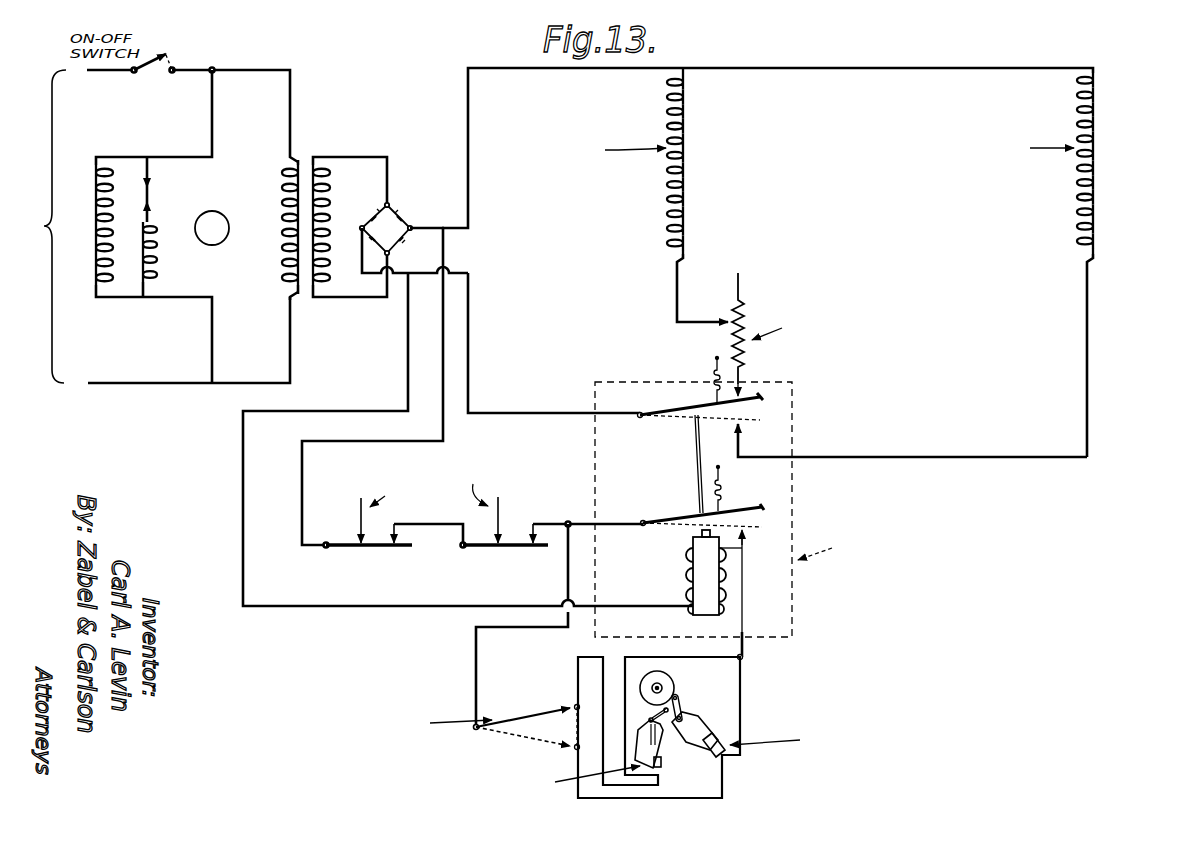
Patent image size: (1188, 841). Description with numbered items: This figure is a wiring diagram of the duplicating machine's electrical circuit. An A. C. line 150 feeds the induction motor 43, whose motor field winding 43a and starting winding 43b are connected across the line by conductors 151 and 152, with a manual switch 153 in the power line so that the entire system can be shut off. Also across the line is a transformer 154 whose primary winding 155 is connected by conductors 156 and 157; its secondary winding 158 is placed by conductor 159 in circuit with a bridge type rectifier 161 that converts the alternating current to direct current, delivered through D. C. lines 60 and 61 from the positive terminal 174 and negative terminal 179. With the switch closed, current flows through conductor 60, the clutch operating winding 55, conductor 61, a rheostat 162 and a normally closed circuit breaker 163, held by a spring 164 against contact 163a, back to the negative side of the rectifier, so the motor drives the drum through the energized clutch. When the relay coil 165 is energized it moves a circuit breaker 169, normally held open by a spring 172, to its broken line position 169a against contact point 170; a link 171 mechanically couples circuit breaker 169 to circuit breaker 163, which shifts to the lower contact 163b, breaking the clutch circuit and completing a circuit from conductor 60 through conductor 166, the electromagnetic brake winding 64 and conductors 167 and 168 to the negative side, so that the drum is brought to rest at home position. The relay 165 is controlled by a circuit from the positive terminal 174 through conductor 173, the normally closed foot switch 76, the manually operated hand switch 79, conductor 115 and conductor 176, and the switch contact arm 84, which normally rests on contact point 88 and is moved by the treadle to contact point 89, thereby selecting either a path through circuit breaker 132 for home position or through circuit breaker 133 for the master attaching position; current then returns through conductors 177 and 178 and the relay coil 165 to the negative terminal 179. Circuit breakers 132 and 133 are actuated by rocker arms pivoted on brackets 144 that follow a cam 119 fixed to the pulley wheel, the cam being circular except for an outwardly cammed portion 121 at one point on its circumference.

The motor 43 is at (122, 156).
The motor field winding 43a is at (95, 297).
The starting winding 43b is at (157, 272).
The clutch operating winding 55 is at (686, 182).
The D. C. line 60 is at (470, 196).
The D. C. line 61 is at (468, 350).
The electromagnetic brake winding 64 is at (1094, 165).
The normally closed switch 76 is at (340, 545).
The hand switch 79 is at (510, 543).
The switch contact arm 84 is at (522, 718).
The contact point 88 is at (577, 707).
The contact point 89 is at (577, 747).
The conductor 115 is at (555, 520).
The cam 119 is at (668, 690).
The outwardly cammed portion 121 is at (680, 708).
The circuit breaker 132 is at (668, 766).
The circuit breaker 133 is at (722, 731).
The brackets 144 is at (690, 722).
The A. C. line 150 is at (55, 206).
The conductor 151 is at (212, 117).
The conductor 152 is at (212, 343).
The manual switch 153 is at (180, 52).
The transformer 154 is at (300, 300).
The primary winding 155 is at (296, 160).
The conductor 156 is at (291, 95).
The conductor 157 is at (290, 375).
The transformer secondary winding 158 is at (328, 222).
The conductor 159 is at (362, 157).
The bridge type rectifier 161 is at (400, 211).
The rheostat 162 is at (744, 318).
The normally closed circuit breaker 163 is at (752, 406).
The contact 163a is at (748, 397).
The lower contact 163b is at (758, 420).
The spring 164 is at (715, 375).
The relay coil 165 is at (692, 568).
The conductor 166 is at (983, 58).
The conductor 167 is at (1087, 393).
The conductor 168 is at (945, 457).
The circuit breaker 169 is at (756, 512).
The broken line position 169a is at (758, 527).
The contact point 170 is at (744, 565).
The link 171 is at (694, 460).
The spring 172 is at (722, 495).
The conductor 173 is at (380, 432).
The positive terminal 174 is at (498, 234).
The conductor 176 is at (475, 655).
The conductor 177 is at (742, 622).
The conductor 178 is at (724, 580).
The negative terminal 179 is at (655, 604).